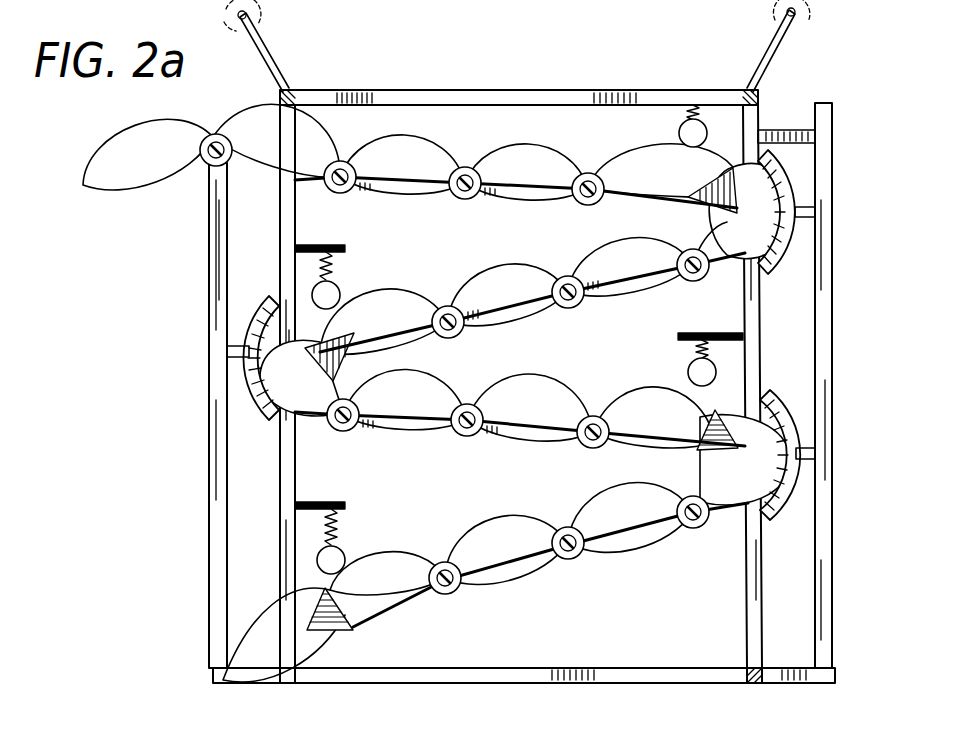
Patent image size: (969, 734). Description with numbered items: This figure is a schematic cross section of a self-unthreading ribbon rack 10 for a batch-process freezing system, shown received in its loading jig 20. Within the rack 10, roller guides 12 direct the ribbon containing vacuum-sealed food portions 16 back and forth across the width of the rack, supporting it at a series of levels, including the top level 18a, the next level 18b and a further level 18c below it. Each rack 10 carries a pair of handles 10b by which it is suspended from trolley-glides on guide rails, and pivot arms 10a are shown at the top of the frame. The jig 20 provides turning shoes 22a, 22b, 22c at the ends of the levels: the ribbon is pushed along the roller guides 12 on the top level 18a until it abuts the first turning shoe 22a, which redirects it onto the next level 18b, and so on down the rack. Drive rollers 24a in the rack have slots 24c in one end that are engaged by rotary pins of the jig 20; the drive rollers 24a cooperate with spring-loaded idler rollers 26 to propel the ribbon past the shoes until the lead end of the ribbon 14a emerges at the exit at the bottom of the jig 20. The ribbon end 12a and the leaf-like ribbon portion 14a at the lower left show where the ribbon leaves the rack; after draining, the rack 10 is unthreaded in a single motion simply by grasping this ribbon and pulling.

The self-unthreading ribbon rack 10 is at (526, 135).
The pivot arms 10a is at (272, 57).
The handles 10b is at (760, 668).
The roller guides 12 is at (575, 305).
The ribbon end 12a is at (193, 730).
The lead end of the ribbon 14a is at (242, 655).
The vacuum-sealed food portions 16 is at (164, 167).
The top level 18a is at (492, 203).
The next level 18b is at (470, 324).
The third roller rod 18c is at (447, 427).
The loading jig 20 is at (217, 400).
The first turning shoe 22a is at (792, 182).
The arcuate guide 22b is at (262, 306).
The arcuate guide 22c is at (788, 520).
The drive rollers 24a is at (700, 200).
The slots 24c is at (805, 250).
The spring-loaded idler rollers 26 is at (688, 371).